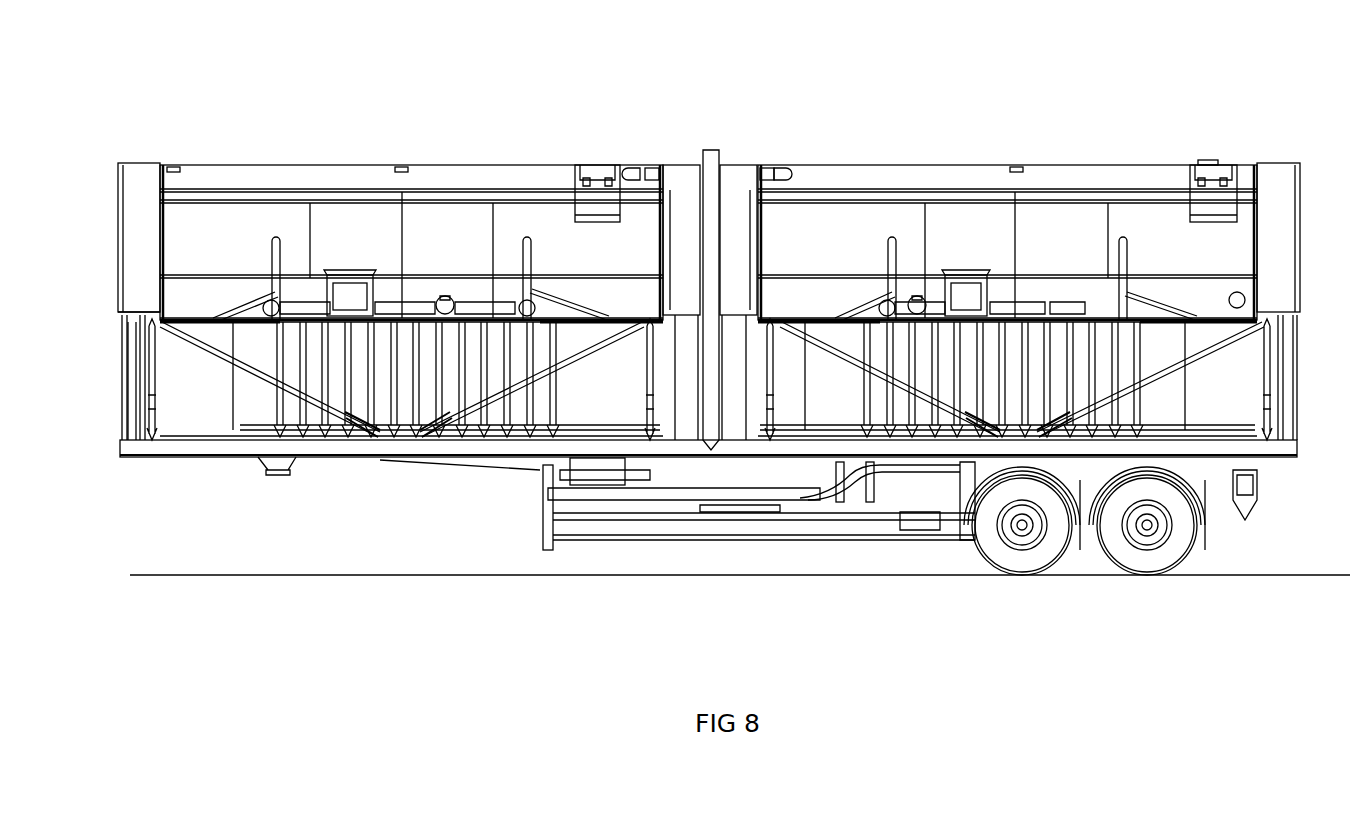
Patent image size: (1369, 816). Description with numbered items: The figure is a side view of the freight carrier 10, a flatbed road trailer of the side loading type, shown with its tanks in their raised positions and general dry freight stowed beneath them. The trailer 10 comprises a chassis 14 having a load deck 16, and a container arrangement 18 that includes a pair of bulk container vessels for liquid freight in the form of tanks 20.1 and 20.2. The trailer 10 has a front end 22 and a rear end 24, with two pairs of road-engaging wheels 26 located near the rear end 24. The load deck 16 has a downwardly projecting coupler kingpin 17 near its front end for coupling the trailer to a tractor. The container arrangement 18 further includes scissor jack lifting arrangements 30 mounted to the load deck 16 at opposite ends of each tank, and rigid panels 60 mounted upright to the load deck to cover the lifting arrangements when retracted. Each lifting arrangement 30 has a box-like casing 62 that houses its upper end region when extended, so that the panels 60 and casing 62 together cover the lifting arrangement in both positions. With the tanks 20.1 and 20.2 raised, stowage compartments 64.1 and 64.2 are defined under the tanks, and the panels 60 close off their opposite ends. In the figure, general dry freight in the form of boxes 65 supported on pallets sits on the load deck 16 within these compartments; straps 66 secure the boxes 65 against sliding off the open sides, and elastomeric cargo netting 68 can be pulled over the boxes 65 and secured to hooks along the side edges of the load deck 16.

The freight carrier 10 is at (805, 103).
The chassis 14 is at (536, 497).
The load deck 16 is at (210, 448).
The coupler kingpin 17 is at (290, 470).
The container arrangement 18 is at (1203, 160).
The tank 20.1 is at (248, 195).
The tank 20.2 is at (860, 200).
The front end 22 is at (108, 222).
The rear end 24 is at (1310, 196).
The road-engaging wheels 26 is at (1120, 575).
The scissor jack lifting arrangement 30 is at (112, 380).
The rigid panels 60 is at (160, 405).
The box-like casing 62 is at (150, 165).
The stowage compartment 64.1 is at (477, 388).
The stowage compartment 64.2 is at (1242, 370).
The boxes 65 is at (505, 340).
The straps 66 is at (208, 322).
The cargo netting 68 is at (370, 432).